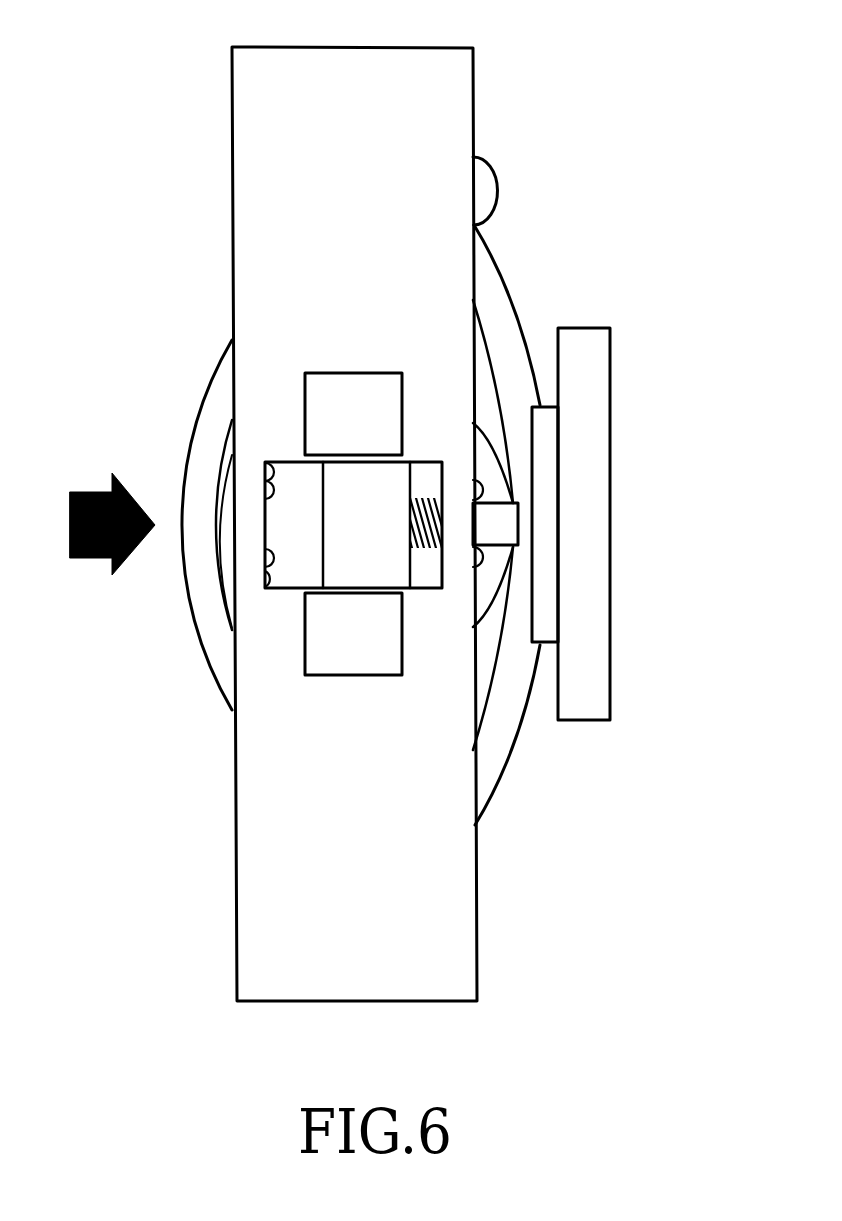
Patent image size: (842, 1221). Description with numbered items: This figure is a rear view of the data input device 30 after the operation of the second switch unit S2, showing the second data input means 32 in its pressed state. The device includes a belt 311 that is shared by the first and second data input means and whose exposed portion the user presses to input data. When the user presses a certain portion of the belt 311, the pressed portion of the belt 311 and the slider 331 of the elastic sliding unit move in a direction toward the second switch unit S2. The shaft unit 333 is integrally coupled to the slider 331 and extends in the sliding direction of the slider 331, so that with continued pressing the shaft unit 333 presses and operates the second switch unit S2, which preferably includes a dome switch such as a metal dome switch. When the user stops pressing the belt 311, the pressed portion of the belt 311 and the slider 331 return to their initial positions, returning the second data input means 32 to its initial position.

The data input device 30 is at (593, 127).
The belt 311 is at (217, 395).
The second data input means 32 is at (204, 698).
The slider 331 is at (348, 573).
The shaft unit 333 is at (508, 525).
The second switch unit S2 is at (590, 480).